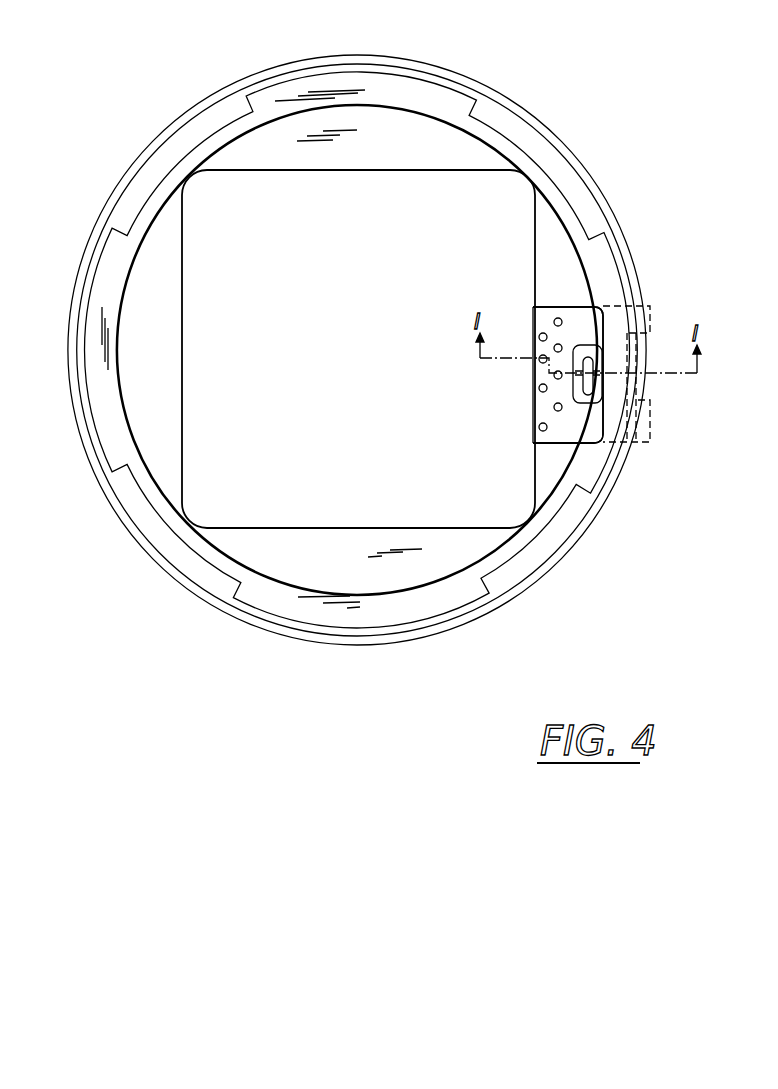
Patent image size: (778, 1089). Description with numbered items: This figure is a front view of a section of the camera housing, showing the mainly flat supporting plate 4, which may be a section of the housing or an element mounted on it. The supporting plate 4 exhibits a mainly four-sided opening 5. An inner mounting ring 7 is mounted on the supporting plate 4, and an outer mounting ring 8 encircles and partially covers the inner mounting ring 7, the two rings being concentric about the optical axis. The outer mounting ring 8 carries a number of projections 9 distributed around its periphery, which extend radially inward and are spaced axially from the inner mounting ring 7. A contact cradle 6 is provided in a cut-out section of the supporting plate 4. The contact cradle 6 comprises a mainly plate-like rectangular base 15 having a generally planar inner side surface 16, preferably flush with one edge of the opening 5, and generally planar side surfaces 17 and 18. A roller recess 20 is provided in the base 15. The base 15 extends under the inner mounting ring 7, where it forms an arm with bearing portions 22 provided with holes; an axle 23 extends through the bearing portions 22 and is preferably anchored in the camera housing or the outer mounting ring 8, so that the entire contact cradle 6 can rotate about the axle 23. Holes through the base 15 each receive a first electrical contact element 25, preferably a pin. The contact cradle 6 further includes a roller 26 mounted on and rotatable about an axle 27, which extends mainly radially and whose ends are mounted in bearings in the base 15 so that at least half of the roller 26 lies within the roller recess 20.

The supporting plate 4 is at (371, 128).
The opening 5 is at (202, 278).
The contact cradle 6 is at (516, 384).
The inner mounting ring 7 is at (327, 85).
The outer mounting ring 8 is at (450, 88).
The projections 9 is at (178, 160).
The base 15 is at (577, 317).
The inner side surface 16 is at (532, 408).
The side surface 17 is at (553, 447).
The side surface 18 is at (553, 307).
The roller recess 20 is at (587, 347).
The bearing portions 22 is at (650, 320).
The axle 23 is at (644, 402).
The first electrical contact element 25 is at (540, 334).
The roller 26 is at (589, 388).
The axle 27 is at (598, 392).